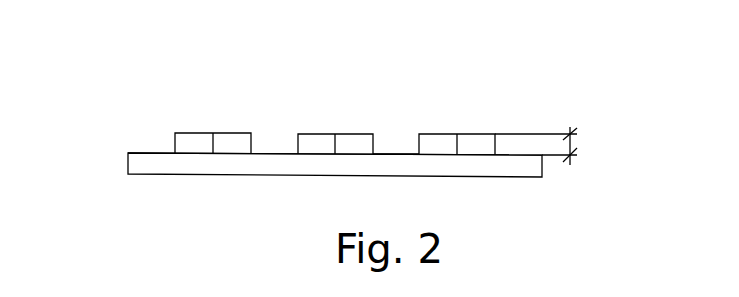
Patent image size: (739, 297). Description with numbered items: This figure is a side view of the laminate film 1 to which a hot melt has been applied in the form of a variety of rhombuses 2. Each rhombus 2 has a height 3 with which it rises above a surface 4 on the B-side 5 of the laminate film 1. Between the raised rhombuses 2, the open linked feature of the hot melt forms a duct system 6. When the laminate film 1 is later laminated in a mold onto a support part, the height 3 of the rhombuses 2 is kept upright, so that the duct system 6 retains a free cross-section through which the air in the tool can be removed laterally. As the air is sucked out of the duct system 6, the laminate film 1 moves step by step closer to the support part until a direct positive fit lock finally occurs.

The laminate film 1 is at (148, 168).
The rhombus 2 is at (197, 142).
The height 3 is at (572, 143).
The surface 4 is at (281, 152).
The B-side 5 is at (334, 116).
The duct system 6 is at (400, 134).